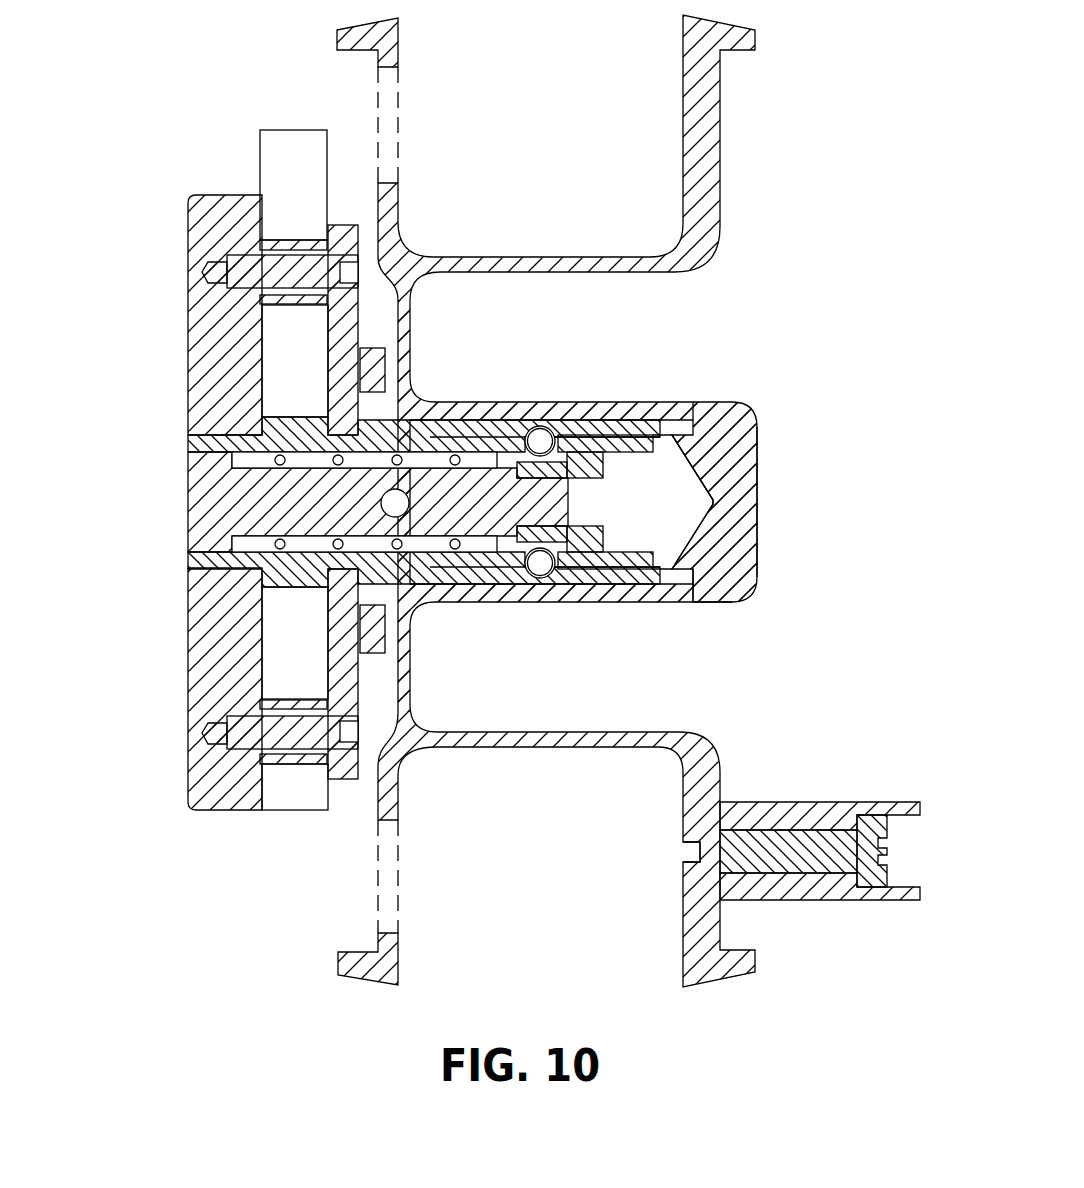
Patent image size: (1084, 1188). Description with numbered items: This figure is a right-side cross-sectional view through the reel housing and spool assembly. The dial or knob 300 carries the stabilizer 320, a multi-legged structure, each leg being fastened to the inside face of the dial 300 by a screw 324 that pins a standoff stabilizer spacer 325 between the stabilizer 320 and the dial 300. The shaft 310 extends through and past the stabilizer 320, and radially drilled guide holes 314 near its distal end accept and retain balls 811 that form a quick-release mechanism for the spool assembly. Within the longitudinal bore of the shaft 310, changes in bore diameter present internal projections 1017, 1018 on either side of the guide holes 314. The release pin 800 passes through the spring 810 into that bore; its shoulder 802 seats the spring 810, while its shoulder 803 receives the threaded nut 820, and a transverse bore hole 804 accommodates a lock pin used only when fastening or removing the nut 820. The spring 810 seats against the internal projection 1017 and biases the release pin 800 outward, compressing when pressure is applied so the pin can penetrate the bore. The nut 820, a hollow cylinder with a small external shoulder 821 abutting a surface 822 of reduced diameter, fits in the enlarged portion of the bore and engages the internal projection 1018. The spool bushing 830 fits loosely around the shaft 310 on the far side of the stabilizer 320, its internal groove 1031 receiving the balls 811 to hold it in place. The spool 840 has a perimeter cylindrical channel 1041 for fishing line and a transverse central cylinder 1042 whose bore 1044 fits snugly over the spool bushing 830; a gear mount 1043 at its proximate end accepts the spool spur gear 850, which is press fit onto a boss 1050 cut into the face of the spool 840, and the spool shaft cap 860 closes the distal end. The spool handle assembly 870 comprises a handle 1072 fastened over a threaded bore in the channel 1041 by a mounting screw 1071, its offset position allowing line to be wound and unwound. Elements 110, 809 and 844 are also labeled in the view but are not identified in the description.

The shaft 110 is at (293, 130).
The dial 300 is at (232, 195).
The shaft 310 is at (190, 447).
The guide holes 314 is at (525, 560).
The stabilizer 320 is at (328, 355).
The screw 324 is at (205, 272).
The stabilizer spacer 325 is at (293, 303).
The release pin 800 is at (375, 516).
The shoulder 802 is at (187, 433).
The shoulder 803 is at (498, 440).
The bore hole 804 is at (232, 553).
The cavity 809 is at (305, 455).
The spring 810 is at (409, 503).
The balls 811 is at (543, 433).
The nut 820 is at (603, 455).
The external shoulder 821 is at (608, 540).
The surface of reduced diameter 822 is at (563, 575).
The spool bushing 830 is at (665, 420).
The spool 840 is at (578, 748).
The cap wall 844 is at (700, 470).
The spool spur gear 850 is at (413, 707).
The spool shaft cap 860 is at (758, 528).
The spool handle assembly 870 is at (845, 903).
The internal projection 1017 is at (498, 585).
The internal projection 1018 is at (578, 570).
The internal groove 1031 is at (610, 447).
The cylindrical channel 1041 is at (685, 860).
The transverse central cylinder 1042 is at (688, 600).
The gear mount 1043 is at (400, 412).
The bore 1044 is at (677, 510).
The boss 1050 is at (385, 622).
The mounting screw 1071 is at (882, 850).
The handle 1072 is at (803, 900).